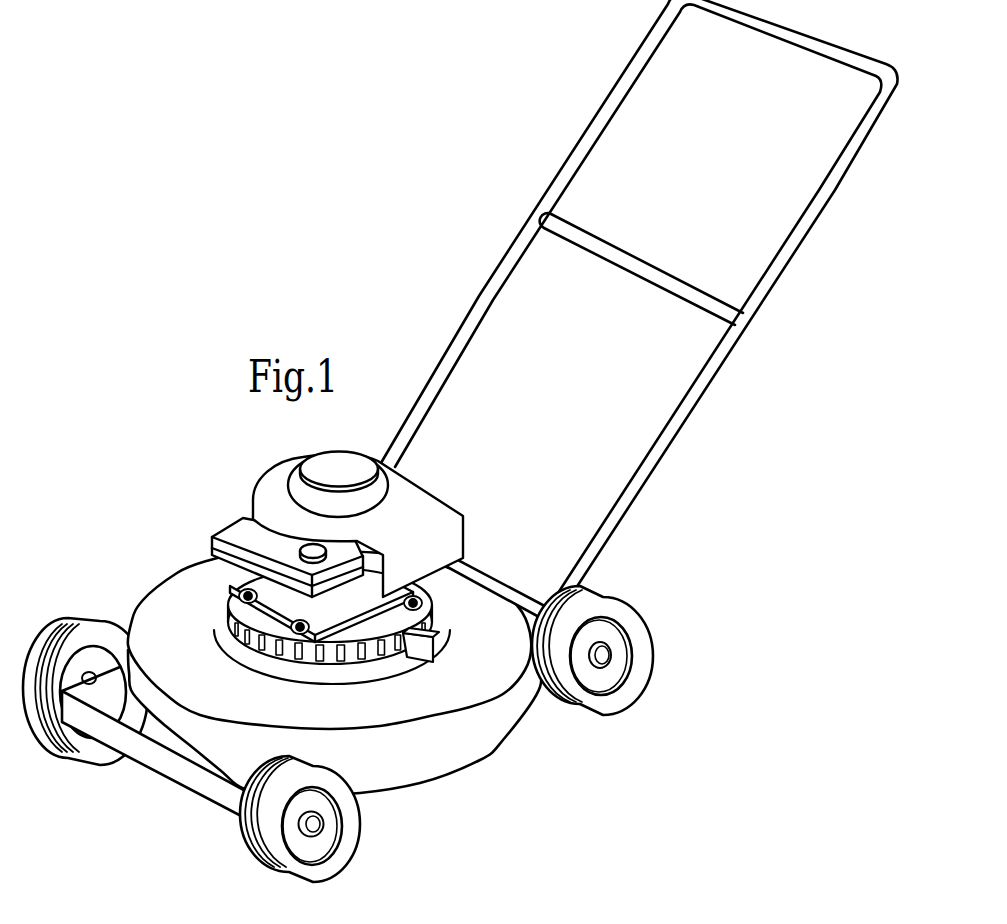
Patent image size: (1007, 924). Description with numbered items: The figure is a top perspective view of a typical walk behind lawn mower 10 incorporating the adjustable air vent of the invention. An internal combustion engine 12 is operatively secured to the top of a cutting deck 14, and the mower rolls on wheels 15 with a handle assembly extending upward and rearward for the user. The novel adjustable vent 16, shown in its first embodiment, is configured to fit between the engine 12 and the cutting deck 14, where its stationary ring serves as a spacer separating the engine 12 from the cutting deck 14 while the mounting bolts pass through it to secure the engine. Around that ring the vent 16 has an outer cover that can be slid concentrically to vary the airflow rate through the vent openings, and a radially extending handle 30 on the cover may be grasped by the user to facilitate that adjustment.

The walk behind lawn mower 10 is at (148, 330).
The internal combustion engine 12 is at (412, 491).
The cutting deck 14 is at (492, 745).
The wheels 15 is at (359, 661).
The adjustable vent 16 is at (443, 613).
The handle 30 is at (436, 655).